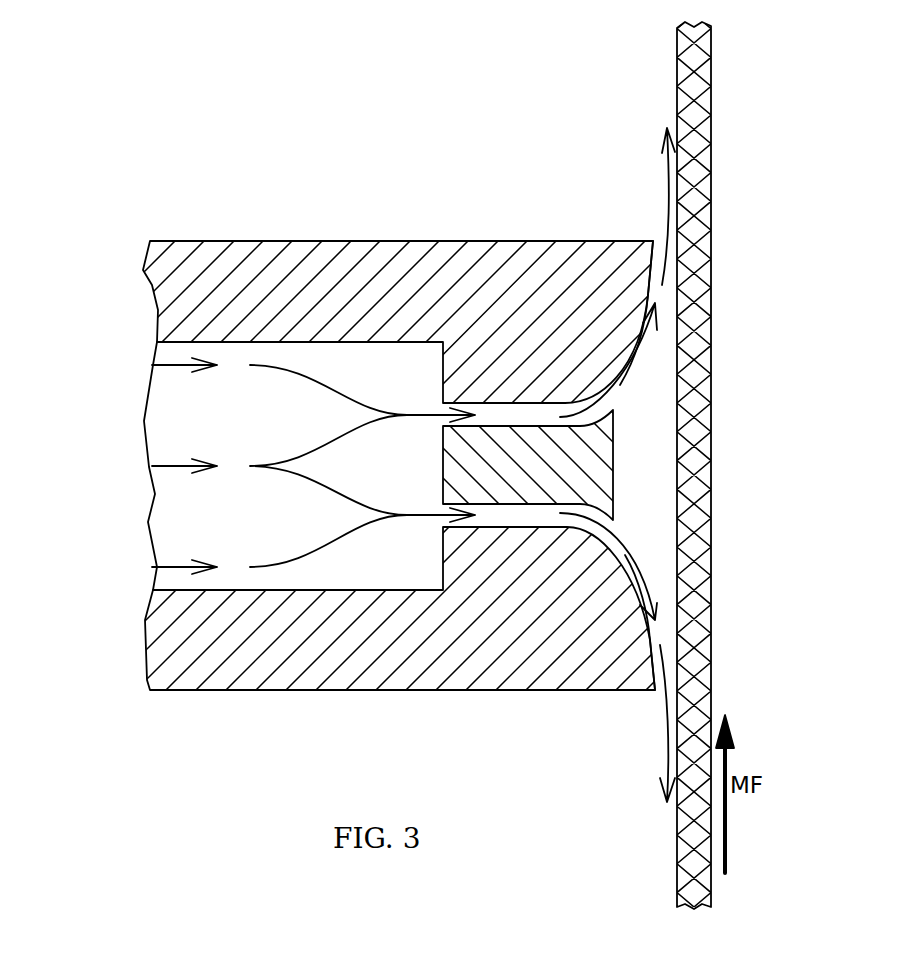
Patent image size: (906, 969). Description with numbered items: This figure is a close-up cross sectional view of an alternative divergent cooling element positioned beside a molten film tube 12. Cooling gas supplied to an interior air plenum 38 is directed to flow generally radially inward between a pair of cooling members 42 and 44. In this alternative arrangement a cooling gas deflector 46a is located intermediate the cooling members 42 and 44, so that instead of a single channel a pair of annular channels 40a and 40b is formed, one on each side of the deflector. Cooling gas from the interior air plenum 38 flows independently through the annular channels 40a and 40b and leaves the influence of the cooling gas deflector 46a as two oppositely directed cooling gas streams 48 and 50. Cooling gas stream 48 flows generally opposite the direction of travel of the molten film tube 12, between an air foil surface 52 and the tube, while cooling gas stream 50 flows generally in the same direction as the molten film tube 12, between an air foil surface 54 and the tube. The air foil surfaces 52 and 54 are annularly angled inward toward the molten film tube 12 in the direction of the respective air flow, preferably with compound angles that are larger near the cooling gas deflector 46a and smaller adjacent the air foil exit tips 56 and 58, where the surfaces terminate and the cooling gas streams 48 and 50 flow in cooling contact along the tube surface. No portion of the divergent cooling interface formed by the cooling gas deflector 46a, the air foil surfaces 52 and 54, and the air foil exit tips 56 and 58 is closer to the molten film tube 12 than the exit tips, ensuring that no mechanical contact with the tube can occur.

The molten film tube 12 is at (711, 152).
The interior air plenum 38 is at (144, 421).
The annular channel 40a is at (527, 520).
The annular channel 40b is at (526, 413).
The cooling member 42 is at (348, 662).
The cooling member 44 is at (342, 255).
The cooling gas deflector 46a is at (582, 463).
The cooling gas stream 48 is at (667, 755).
The cooling gas stream 50 is at (668, 177).
The air foil surface 52 is at (650, 642).
The air foil surface 54 is at (648, 295).
The air foil exit tip 56 is at (653, 693).
The air foil exit tip 58 is at (653, 240).